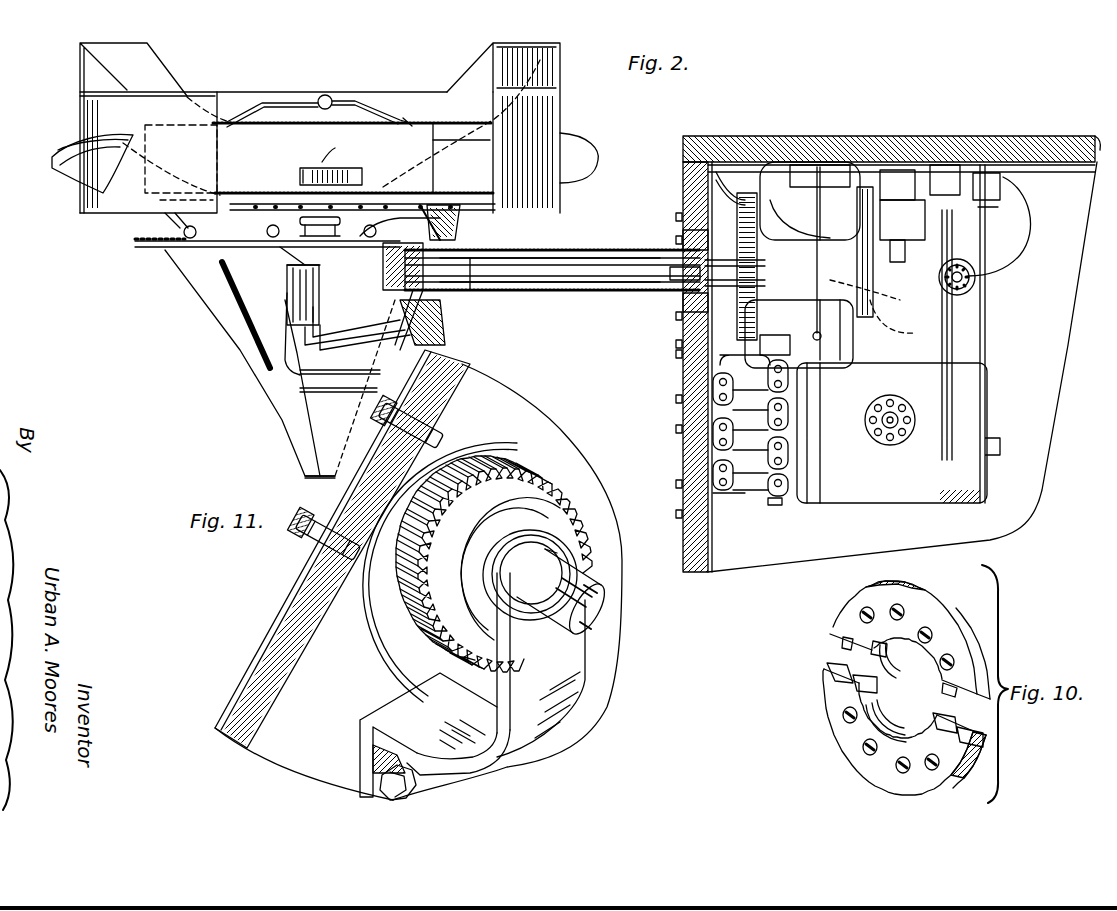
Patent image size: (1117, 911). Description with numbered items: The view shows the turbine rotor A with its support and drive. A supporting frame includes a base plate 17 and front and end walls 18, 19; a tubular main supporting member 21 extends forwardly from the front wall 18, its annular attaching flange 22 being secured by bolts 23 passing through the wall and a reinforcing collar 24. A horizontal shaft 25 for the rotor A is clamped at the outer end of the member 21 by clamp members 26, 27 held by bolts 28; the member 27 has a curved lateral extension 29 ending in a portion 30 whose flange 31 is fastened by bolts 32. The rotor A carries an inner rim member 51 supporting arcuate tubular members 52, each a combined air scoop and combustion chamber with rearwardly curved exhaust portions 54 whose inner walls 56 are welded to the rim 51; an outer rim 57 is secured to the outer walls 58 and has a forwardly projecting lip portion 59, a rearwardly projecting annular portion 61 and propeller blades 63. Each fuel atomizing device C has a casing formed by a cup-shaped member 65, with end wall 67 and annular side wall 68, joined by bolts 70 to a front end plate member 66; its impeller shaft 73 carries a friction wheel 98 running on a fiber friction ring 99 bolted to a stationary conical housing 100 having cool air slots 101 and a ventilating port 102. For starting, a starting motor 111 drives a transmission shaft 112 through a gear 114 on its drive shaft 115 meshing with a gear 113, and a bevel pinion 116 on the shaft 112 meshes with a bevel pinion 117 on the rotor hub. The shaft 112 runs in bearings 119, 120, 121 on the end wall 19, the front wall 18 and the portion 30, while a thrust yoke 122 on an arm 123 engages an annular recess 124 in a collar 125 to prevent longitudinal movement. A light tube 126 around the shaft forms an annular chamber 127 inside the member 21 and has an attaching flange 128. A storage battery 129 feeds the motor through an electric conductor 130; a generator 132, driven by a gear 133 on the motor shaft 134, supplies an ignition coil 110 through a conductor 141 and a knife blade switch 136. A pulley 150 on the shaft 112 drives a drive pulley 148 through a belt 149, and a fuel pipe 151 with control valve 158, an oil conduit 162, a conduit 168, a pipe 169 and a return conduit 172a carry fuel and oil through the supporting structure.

In FIG. 2, the base plate 17 is at (1003, 526).
In FIG. 2, the front wall or panel 18 is at (700, 570).
In FIG. 11, the front wall or panel 18 is at (222, 733).
In FIG. 2, the end wall or panel 19 is at (1096, 148).
In FIG. 2, the main supporting member 21 is at (665, 256).
In FIG. 2, the annular attaching flange 22 is at (686, 230).
In FIG. 2, the bolts 23 is at (676, 238).
In FIG. 11, the bolts 23 is at (448, 455).
In FIG. 2, the reinforcing collar 24 is at (676, 214).
In FIG. 11, the reinforcing collar 24 is at (368, 608).
In FIG. 2, the horizontal shaft 25 is at (295, 328).
In FIG. 2, the clamp member 26 is at (290, 283).
In FIG. 2, the clamp member 27 is at (305, 312).
In FIG. 2, the bolts 28 is at (305, 300).
In FIG. 2, the curved lateral extension 29 is at (330, 338).
In FIG. 2, the portion 30 is at (420, 240).
In FIG. 2, the flange 31 is at (465, 225).
In FIG. 10, the flange 31 is at (807, 679).
In FIG. 2, the bolts 32 is at (418, 330).
In FIG. 2, the inner rim member 51 is at (460, 150).
In FIG. 2, the tubular members 52 is at (275, 115).
In FIG. 2, the exhaust portions 54 is at (143, 47).
In FIG. 2, the inner walls 56 is at (412, 118).
In FIG. 2, the outer rim 57 is at (78, 116).
In FIG. 2, the outer walls 58 is at (242, 152).
In FIG. 2, the lip portion 59 is at (80, 214).
In FIG. 2, the annular portion 61 is at (78, 95).
In FIG. 2, the propeller blades 63 is at (68, 175).
In FIG. 2, the cup-shaped member 65 is at (358, 175).
In FIG. 2, the front end plate member 66 is at (388, 203).
In FIG. 2, the end wall 67 is at (314, 165).
In FIG. 2, the annular side wall 68 is at (332, 145).
In FIG. 2, the bolts 70 is at (340, 222).
In FIG. 2, the impeller shaft 73 is at (300, 265).
In FIG. 2, the friction wheel 98 is at (295, 252).
In FIG. 2, the fiber race or friction ring 99 is at (158, 247).
In FIG. 2, the conical housing 100 is at (266, 392).
In FIG. 2, the slots 101 is at (270, 366).
In FIG. 2, the ventilating port 102 is at (320, 489).
In FIG. 2, the ignition coil 110 is at (800, 200).
In FIG. 2, the starting motor 111 is at (853, 362).
In FIG. 2, the transmission shaft 112 is at (630, 296).
In FIG. 11, the transmission shaft 112 is at (604, 614).
In FIG. 11, the gear 113 is at (490, 564).
In FIG. 2, the gear 114 is at (676, 398).
In FIG. 2, the drive shaft 115 is at (676, 314).
In FIG. 2, the bevel pinion 116 is at (430, 338).
In FIG. 2, the bevel pinion 117 is at (290, 222).
In FIG. 2, the bearing 119 is at (872, 325).
In FIG. 2, the bearing 120 is at (726, 272).
In FIG. 2, the bearing 121 is at (448, 295).
In FIG. 2, the thrust yoke 122 is at (810, 420).
In FIG. 11, the thrust yoke 122 is at (500, 612).
In FIG. 11, the arm 123 is at (585, 680).
In FIG. 2, the annular recess 124 is at (822, 362).
In FIG. 11, the annular recess 124 is at (558, 548).
In FIG. 2, the collar 125 is at (815, 390).
In FIG. 11, the collar 125 is at (562, 562).
In FIG. 2, the tube 126 is at (568, 292).
In FIG. 2, the annular chamber 127 is at (594, 256).
In FIG. 2, the annular attaching flange 128 is at (676, 353).
In FIG. 2, the storage battery 129 is at (752, 492).
In FIG. 2, the electric conductor 130 is at (988, 126).
In FIG. 2, the electric generator 132 is at (845, 180).
In FIG. 2, the gear 133 is at (745, 190).
In FIG. 2, the motor shaft 134 is at (760, 190).
In FIG. 2, the knife blade switch 136 is at (1020, 162).
In FIG. 2, the conductor 141 is at (880, 180).
In FIG. 2, the drive pulley 148 is at (925, 165).
In FIG. 2, the belt 149 is at (898, 231).
In FIG. 2, the pulley 150 is at (912, 296).
In FIG. 2, the pipe 151 is at (312, 398).
In FIG. 2, the control valve 158 is at (997, 190).
In FIG. 2, the conduit 162 is at (522, 295).
In FIG. 2, the conduit 168 is at (380, 100).
In FIG. 2, the pipe 169 is at (260, 117).
In FIG. 2, the return conduit 172a is at (560, 256).
In FIG. 2, the turbine rotor A is at (217, 92).
In FIG. 2, the fuel atomizing device C is at (352, 157).